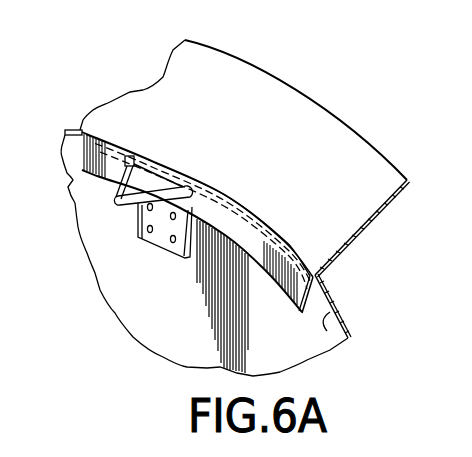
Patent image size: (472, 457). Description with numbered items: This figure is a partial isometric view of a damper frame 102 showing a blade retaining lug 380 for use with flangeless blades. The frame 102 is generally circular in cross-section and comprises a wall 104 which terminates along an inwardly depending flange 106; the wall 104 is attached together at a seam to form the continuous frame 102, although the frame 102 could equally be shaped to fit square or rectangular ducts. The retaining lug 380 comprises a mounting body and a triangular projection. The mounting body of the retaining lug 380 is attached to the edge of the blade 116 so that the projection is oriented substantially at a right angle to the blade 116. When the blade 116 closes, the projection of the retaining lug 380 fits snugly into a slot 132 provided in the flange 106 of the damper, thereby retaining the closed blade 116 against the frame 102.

The frame 102 is at (345, 132).
The wall 104 is at (350, 225).
The inwardly depending flange 106 is at (74, 176).
The blade 116 is at (325, 303).
The slot 132 is at (207, 205).
The retaining lug 380 is at (117, 197).